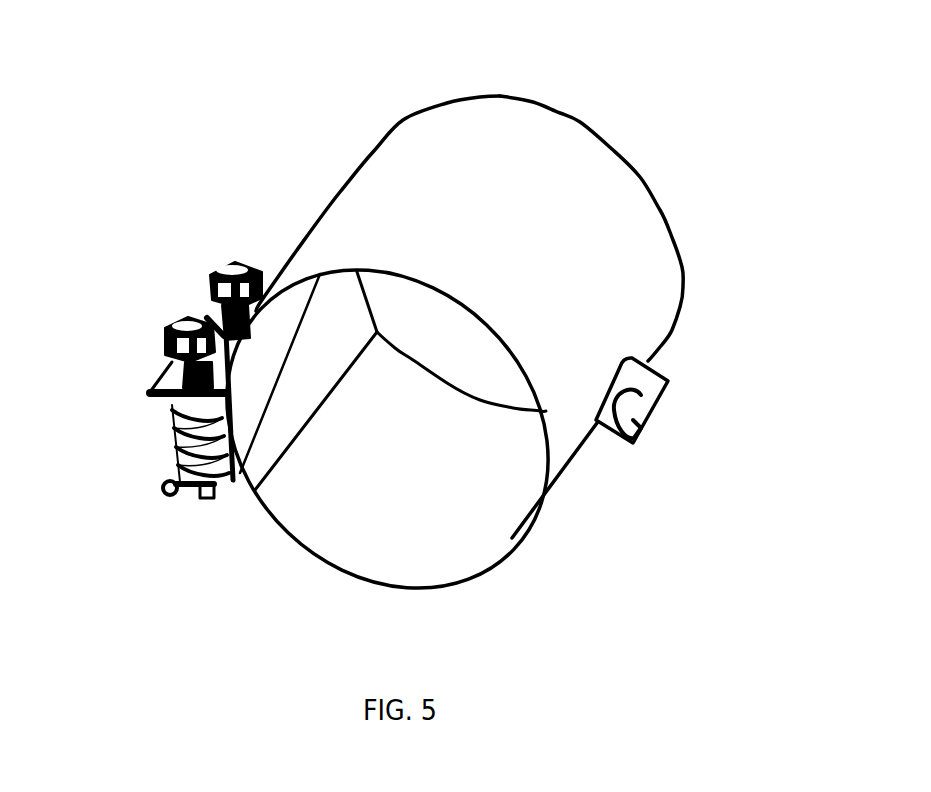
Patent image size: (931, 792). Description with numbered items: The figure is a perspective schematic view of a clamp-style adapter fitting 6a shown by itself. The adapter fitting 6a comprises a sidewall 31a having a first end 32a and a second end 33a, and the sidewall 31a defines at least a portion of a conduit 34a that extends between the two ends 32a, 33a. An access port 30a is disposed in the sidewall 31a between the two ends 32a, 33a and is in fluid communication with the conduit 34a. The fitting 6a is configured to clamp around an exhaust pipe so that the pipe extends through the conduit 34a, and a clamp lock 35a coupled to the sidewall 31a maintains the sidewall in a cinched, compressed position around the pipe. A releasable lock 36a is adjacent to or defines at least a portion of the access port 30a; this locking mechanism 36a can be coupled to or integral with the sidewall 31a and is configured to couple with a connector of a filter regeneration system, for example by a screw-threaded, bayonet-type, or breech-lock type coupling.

The adapter fitting 6a is at (181, 80).
The access port 30a is at (654, 427).
The sidewall 31a is at (570, 135).
The first end 32a is at (512, 558).
The second end 33a is at (695, 294).
The conduit 34a is at (372, 492).
The clamp lock 35a is at (180, 462).
The releasable lock 36a is at (632, 440).